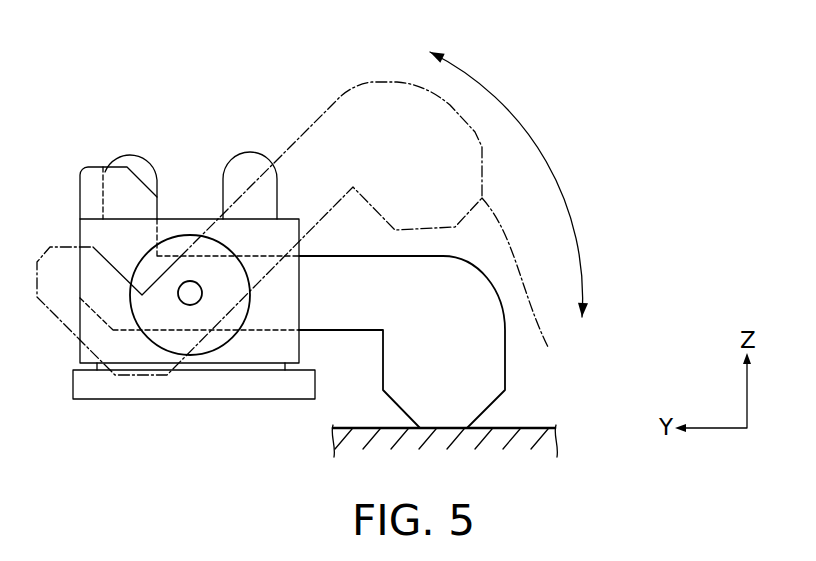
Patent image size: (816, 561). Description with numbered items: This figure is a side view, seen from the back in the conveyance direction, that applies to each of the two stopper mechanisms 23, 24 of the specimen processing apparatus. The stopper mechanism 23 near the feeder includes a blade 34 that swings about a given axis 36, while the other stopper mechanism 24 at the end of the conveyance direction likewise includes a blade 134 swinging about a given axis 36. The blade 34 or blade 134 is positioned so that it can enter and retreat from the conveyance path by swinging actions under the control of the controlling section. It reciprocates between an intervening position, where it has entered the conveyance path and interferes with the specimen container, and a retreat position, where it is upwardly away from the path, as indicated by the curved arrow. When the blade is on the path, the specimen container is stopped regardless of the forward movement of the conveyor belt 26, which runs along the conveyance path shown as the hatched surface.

The stopper mechanism 23 is at (194, 254).
The stopper mechanism 24 is at (187, 218).
The conveyor belt 26 is at (550, 438).
The blade 34 is at (342, 255).
The blade 134 is at (505, 358).
The axis 36 is at (190, 305).